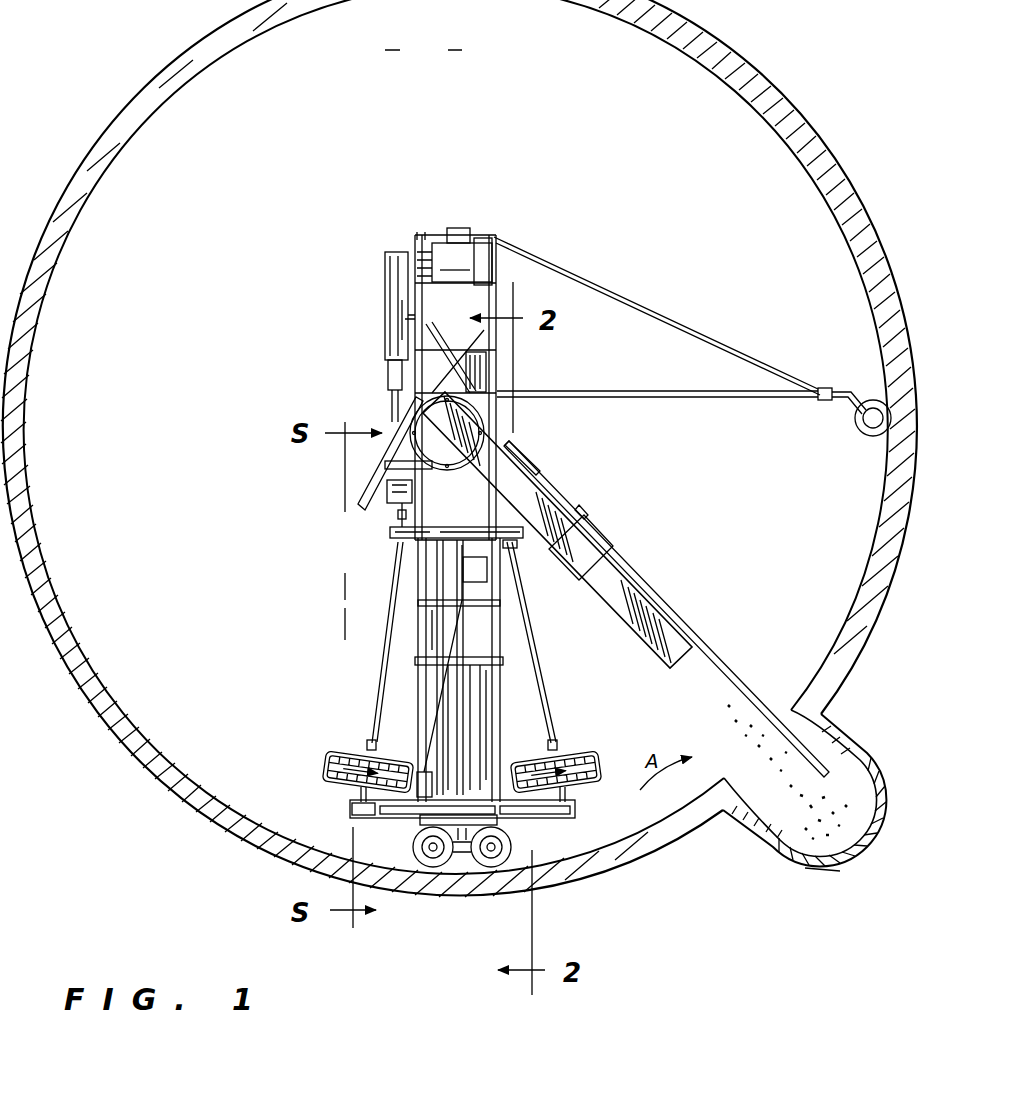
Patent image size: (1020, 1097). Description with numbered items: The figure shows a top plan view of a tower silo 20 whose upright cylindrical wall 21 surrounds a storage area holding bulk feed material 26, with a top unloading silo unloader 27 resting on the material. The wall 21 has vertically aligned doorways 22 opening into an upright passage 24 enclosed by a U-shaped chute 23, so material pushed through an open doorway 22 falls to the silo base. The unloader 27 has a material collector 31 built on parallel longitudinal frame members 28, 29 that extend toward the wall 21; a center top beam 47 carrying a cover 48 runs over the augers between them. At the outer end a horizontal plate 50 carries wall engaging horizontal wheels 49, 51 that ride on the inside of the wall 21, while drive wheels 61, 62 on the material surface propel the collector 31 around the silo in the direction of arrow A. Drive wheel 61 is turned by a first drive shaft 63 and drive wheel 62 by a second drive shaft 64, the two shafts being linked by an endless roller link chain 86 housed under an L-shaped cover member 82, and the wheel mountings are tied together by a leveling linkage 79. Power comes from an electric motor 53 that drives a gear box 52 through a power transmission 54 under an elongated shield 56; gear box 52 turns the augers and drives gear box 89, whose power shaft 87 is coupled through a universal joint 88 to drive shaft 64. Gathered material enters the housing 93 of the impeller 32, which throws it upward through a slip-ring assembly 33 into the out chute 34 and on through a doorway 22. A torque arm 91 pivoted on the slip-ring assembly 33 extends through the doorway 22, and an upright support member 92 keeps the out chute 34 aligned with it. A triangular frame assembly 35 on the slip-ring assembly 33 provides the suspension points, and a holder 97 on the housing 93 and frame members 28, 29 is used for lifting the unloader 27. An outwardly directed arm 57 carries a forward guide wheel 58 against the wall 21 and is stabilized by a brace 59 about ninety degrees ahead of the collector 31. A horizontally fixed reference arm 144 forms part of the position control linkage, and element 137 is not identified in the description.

The tower silo 20 is at (770, 78).
The upright cylindrical wall 21 is at (850, 200).
The doorways 22 is at (785, 785).
The chute 23 is at (832, 872).
The upright passage 24 is at (855, 765).
The feed material 26 is at (423, 50).
The top unloading silo unloader 27 is at (285, 335).
The longitudinal frame member 28 is at (498, 305).
The longitudinal frame member 29 is at (417, 238).
The material collector 31 is at (507, 704).
The impeller 32 is at (510, 499).
The slip-ring assembly 33 is at (497, 393).
The out chute 34 is at (639, 625).
The triangular frame assembly 35 is at (470, 345).
The longitudinal center top beam 47 is at (455, 752).
The cover 48 is at (475, 758).
The wall engaging horizontal wheel 49 is at (420, 862).
The horizontal plate 50 is at (463, 862).
The wall engaging horizontal wheel 51 is at (498, 870).
The gear box 52 is at (495, 360).
The electric motor 53 is at (458, 255).
The power transmission 54 is at (395, 312).
The elongated shield 56 is at (393, 255).
The outwardly directed arm 57 is at (728, 400).
The forward guide wheel 58 is at (862, 400).
The brace 59 is at (645, 300).
The drive wheel 61 is at (592, 762).
The drive wheel 62 is at (325, 768).
The first drive shaft 63 is at (540, 662).
The second drive shaft 64 is at (372, 737).
The leveling linkage 79 is at (518, 820).
The L-shaped cover member 82 is at (390, 540).
The endless roller link chain 86 is at (538, 565).
The power shaft 87 is at (390, 405).
The universal joint 88 is at (396, 517).
The gear box 89 is at (385, 378).
The torque arm 91 is at (745, 652).
The upright support member 92 is at (600, 525).
The housing 93 is at (395, 485).
The holder 97 is at (438, 612).
The small actuator 137 is at (463, 572).
The horizontally fixed reference arm 144 is at (520, 457).